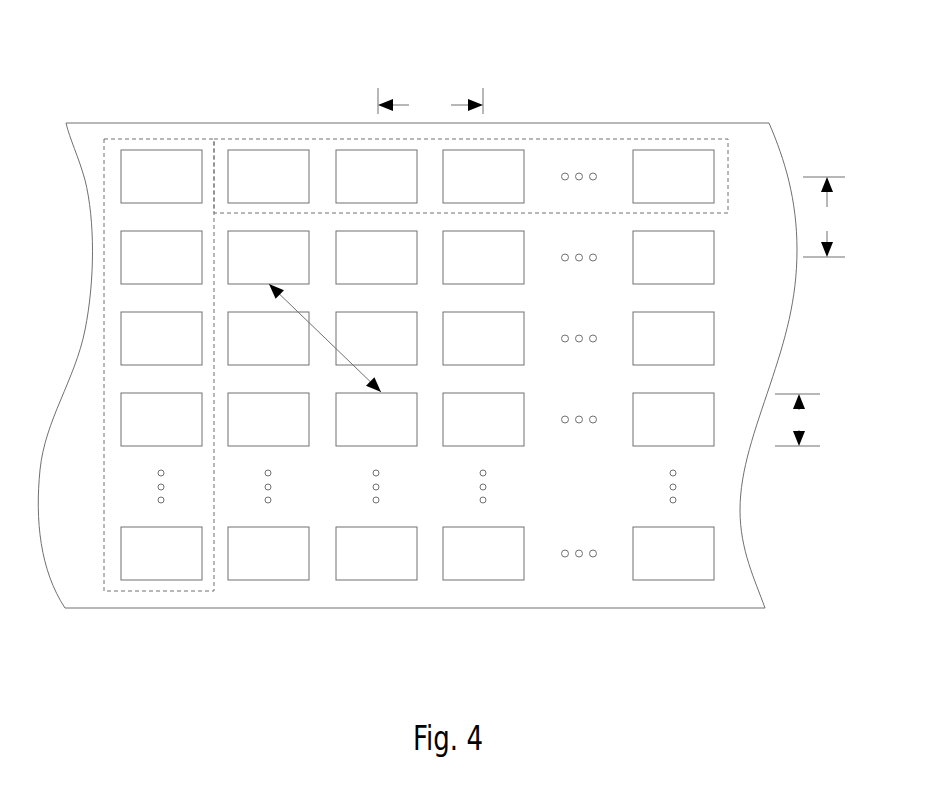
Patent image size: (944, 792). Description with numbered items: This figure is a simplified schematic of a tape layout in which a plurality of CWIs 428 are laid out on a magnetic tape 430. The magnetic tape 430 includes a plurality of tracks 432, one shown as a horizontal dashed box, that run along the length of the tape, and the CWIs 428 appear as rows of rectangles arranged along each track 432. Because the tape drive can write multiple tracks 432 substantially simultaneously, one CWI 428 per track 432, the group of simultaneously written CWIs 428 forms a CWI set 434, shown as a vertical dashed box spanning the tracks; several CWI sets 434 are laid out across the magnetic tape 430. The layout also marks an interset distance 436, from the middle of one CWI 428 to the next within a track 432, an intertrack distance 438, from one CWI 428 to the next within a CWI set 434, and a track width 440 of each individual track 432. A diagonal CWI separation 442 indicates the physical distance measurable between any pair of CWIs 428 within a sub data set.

The CWI 428 is at (490, 583).
The magnetic tape 430 is at (590, 118).
The track 432 is at (690, 138).
The CWI set 434 is at (186, 591).
The interset distance 436 is at (430, 101).
The intertrack distance 438 is at (824, 217).
The track width 440 is at (797, 420).
The CWI separation 442 is at (320, 332).